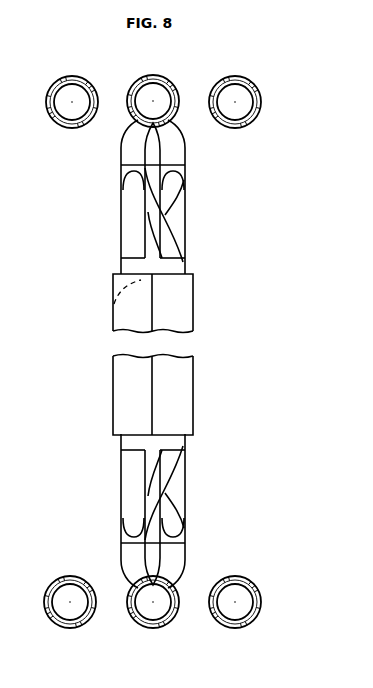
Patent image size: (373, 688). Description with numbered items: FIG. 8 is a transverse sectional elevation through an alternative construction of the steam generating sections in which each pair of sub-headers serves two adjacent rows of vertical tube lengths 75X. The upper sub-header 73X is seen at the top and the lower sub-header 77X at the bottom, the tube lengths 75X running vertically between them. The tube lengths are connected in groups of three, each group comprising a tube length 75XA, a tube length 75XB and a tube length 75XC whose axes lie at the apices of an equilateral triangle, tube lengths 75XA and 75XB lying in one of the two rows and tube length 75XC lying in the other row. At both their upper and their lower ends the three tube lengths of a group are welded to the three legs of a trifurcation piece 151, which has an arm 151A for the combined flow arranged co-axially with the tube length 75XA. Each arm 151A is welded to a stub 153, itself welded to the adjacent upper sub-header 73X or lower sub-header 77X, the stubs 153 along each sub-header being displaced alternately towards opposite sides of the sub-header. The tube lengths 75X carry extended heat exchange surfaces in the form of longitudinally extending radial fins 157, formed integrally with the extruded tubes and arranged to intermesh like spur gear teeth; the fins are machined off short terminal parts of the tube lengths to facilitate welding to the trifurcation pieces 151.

The upper sub-header 73X is at (67, 78).
The lower sub-header 77X is at (92, 621).
The stub 153 is at (137, 142).
The arm of trifurcation piece 151A is at (128, 168).
The trifurcation piece 151 is at (131, 202).
The tube length 75XA is at (114, 303).
The tube length 75XB is at (133, 267).
The tube length 75XC is at (172, 265).
The vertical tube length 75X is at (140, 413).
The radial fin 157 is at (165, 378).